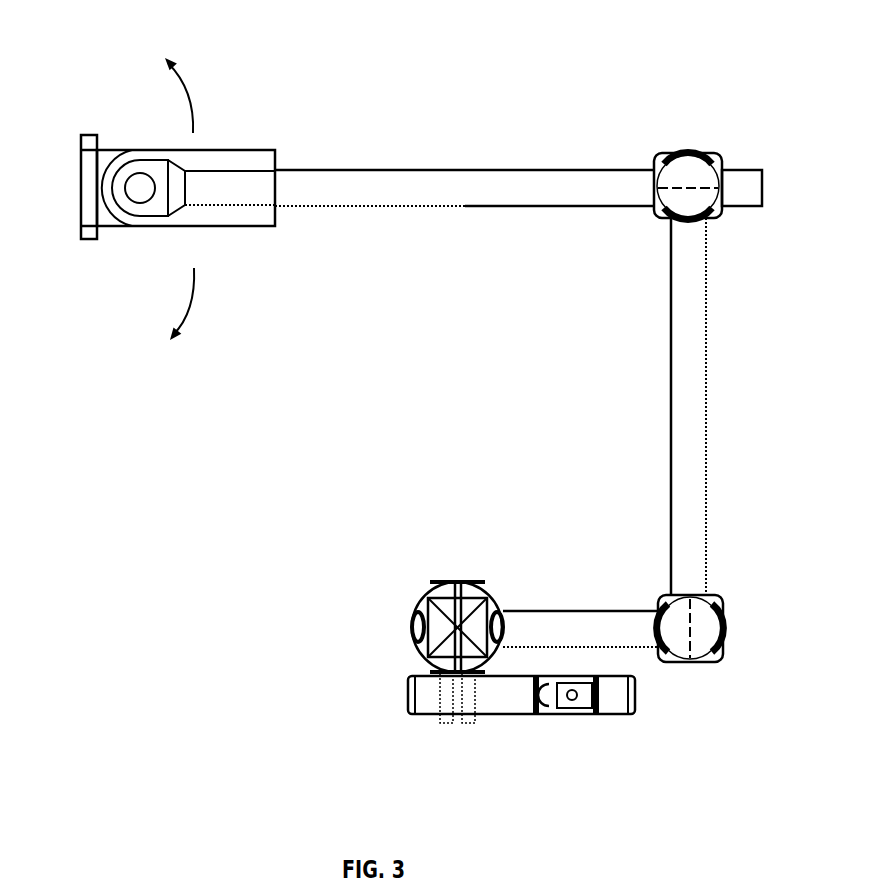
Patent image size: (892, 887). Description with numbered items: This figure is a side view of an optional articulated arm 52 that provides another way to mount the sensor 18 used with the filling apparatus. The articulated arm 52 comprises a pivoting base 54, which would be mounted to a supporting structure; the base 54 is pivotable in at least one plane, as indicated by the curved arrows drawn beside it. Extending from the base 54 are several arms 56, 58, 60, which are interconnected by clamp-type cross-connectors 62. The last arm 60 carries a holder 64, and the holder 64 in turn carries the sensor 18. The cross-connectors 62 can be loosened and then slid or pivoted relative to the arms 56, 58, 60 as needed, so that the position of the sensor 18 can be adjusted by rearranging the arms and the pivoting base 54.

The sensor 18 is at (520, 708).
The articulated arm 52 is at (503, 92).
The pivoting base 54 is at (103, 226).
The arm 56 is at (465, 206).
The arm 58 is at (706, 390).
The last arm 60 is at (590, 618).
The clamp-type cross-connector 62 is at (697, 156).
The holder 64 is at (415, 625).